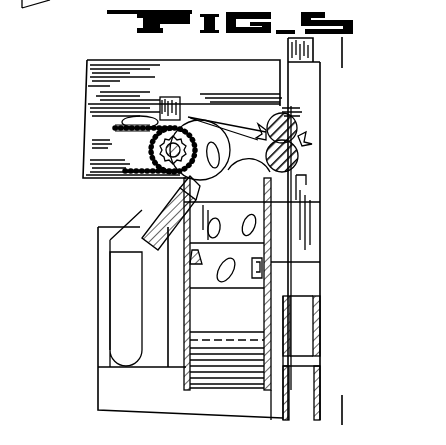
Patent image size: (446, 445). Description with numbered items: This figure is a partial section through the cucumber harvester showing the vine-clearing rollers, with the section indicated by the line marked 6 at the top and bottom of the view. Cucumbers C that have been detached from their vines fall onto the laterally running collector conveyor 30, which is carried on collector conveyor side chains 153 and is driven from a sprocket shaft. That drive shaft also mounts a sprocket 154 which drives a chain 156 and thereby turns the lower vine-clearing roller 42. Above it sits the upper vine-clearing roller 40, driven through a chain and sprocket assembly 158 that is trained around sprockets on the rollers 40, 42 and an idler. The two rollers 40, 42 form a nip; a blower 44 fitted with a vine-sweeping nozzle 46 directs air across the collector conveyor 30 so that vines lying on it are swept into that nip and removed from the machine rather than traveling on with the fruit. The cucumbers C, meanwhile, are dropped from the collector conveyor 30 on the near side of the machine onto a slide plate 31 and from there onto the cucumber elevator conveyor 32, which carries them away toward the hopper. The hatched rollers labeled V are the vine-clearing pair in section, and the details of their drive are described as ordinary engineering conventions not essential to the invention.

The section line 6- 6 is at (348, 410).
The collector conveyor 30 is at (128, 142).
The collector conveyor side chains 153 is at (140, 122).
The chain 156 is at (208, 112).
The sprocket 154 is at (230, 125).
The cucumbers C is at (168, 112).
The rollers V is at (304, 138).
The upper vine-clearing roller 40 is at (300, 106).
The lower vine-clearing roller 42 is at (303, 152).
The chain and sprocket assembly 158 is at (270, 202).
The slide plate 31 is at (280, 263).
The cucumber elevator conveyor 32 is at (278, 292).
The vine-sweeping nozzle 46 is at (158, 192).
The blower 44 is at (114, 309).